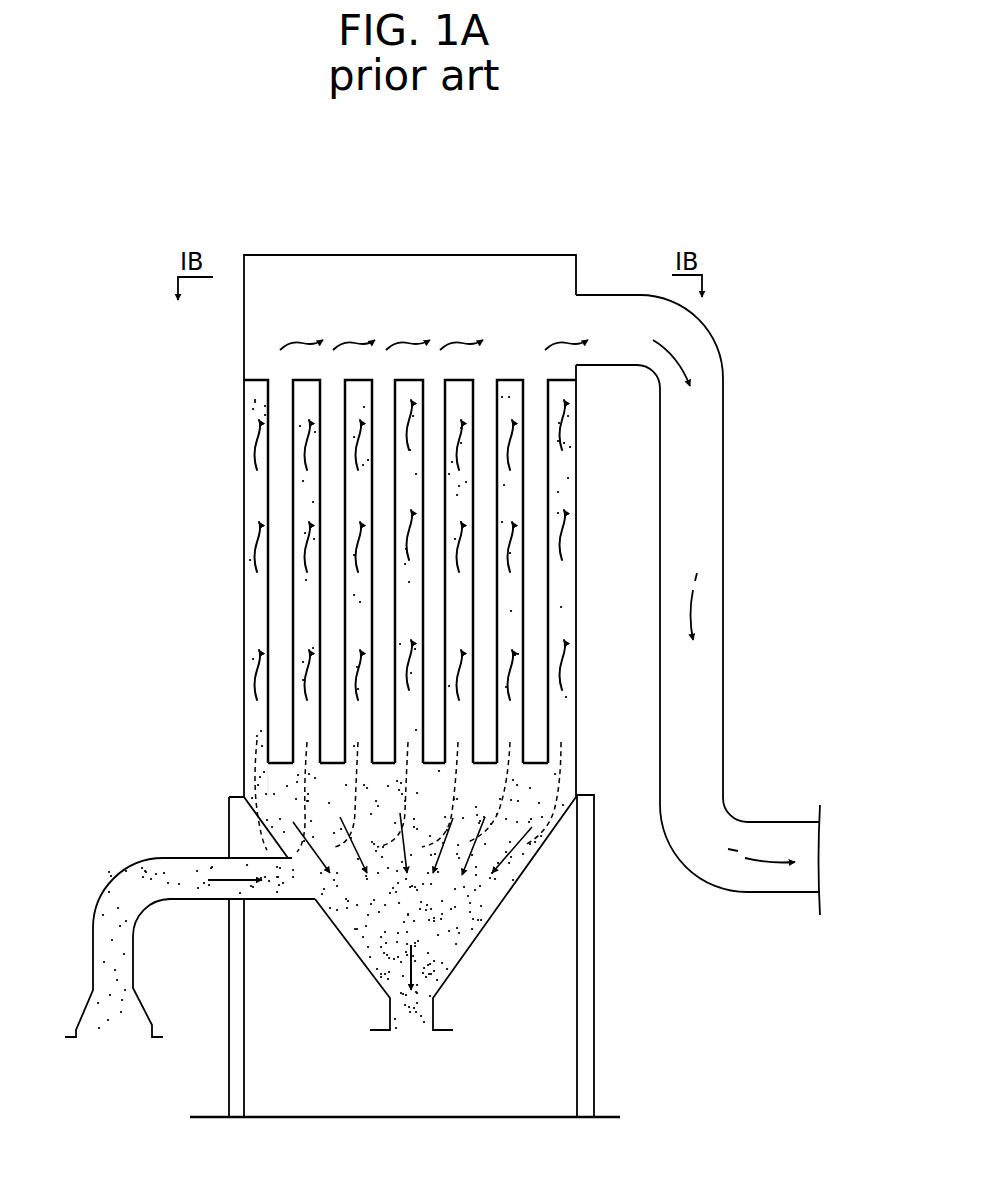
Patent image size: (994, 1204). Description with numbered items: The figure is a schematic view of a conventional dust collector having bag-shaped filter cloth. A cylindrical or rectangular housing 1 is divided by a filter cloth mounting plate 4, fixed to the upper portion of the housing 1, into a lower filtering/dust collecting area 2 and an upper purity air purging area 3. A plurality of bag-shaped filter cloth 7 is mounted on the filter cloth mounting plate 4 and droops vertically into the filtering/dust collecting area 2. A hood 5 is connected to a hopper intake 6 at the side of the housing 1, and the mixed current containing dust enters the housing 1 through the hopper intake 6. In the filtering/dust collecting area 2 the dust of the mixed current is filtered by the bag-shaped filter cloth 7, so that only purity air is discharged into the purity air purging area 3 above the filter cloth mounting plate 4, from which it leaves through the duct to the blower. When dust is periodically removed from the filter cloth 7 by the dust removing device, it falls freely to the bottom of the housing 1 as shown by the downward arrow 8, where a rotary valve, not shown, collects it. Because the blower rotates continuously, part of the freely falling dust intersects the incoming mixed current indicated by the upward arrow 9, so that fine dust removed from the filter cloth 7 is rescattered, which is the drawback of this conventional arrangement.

The housing 1 is at (244, 579).
The filtering/dust collecting area 2 is at (472, 785).
The purity air purging area 3 is at (402, 271).
The filter cloth mounting plate 4 is at (507, 380).
The hood 5 is at (98, 1007).
The hopper intake 6 is at (273, 873).
The bag-shaped filter cloth 7 is at (548, 554).
The downward arrow 8 is at (445, 920).
The upward arrow 9 is at (255, 762).